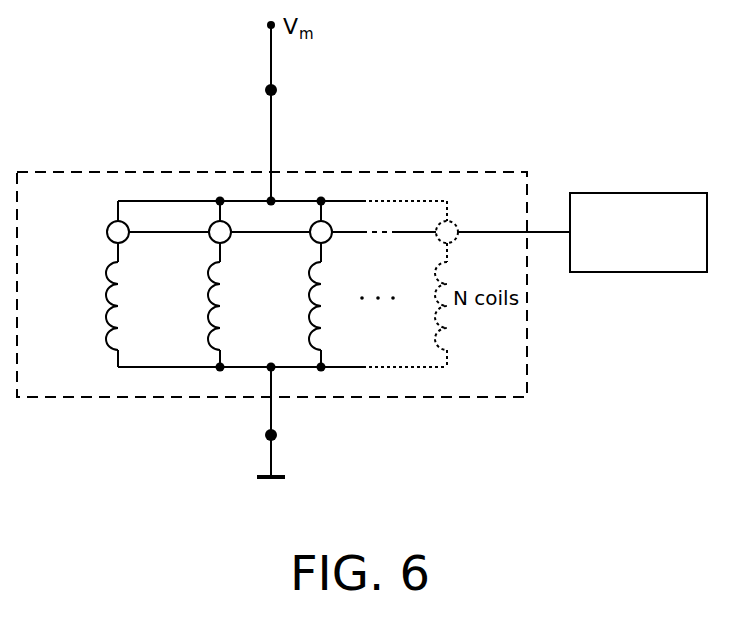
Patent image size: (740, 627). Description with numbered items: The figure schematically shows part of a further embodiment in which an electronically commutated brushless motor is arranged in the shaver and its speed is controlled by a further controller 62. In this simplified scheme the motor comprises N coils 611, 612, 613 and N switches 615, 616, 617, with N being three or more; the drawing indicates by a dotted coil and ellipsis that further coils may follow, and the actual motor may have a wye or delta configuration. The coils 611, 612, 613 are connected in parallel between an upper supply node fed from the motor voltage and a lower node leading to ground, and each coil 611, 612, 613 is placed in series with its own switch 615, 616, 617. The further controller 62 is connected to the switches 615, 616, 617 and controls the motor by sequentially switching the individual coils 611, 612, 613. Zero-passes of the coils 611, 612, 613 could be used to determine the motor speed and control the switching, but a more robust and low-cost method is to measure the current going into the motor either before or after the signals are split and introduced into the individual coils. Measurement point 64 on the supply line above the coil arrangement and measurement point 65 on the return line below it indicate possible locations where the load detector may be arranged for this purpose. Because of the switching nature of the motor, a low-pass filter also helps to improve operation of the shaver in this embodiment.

The coil 611 is at (105, 297).
The coil 612 is at (207, 297).
The coil 613 is at (308, 297).
The switch 615 is at (110, 223).
The switch 616 is at (212, 223).
The switch 617 is at (330, 223).
The further controller 62 is at (640, 193).
The measurement point 64 is at (278, 90).
The measurement point 65 is at (278, 435).